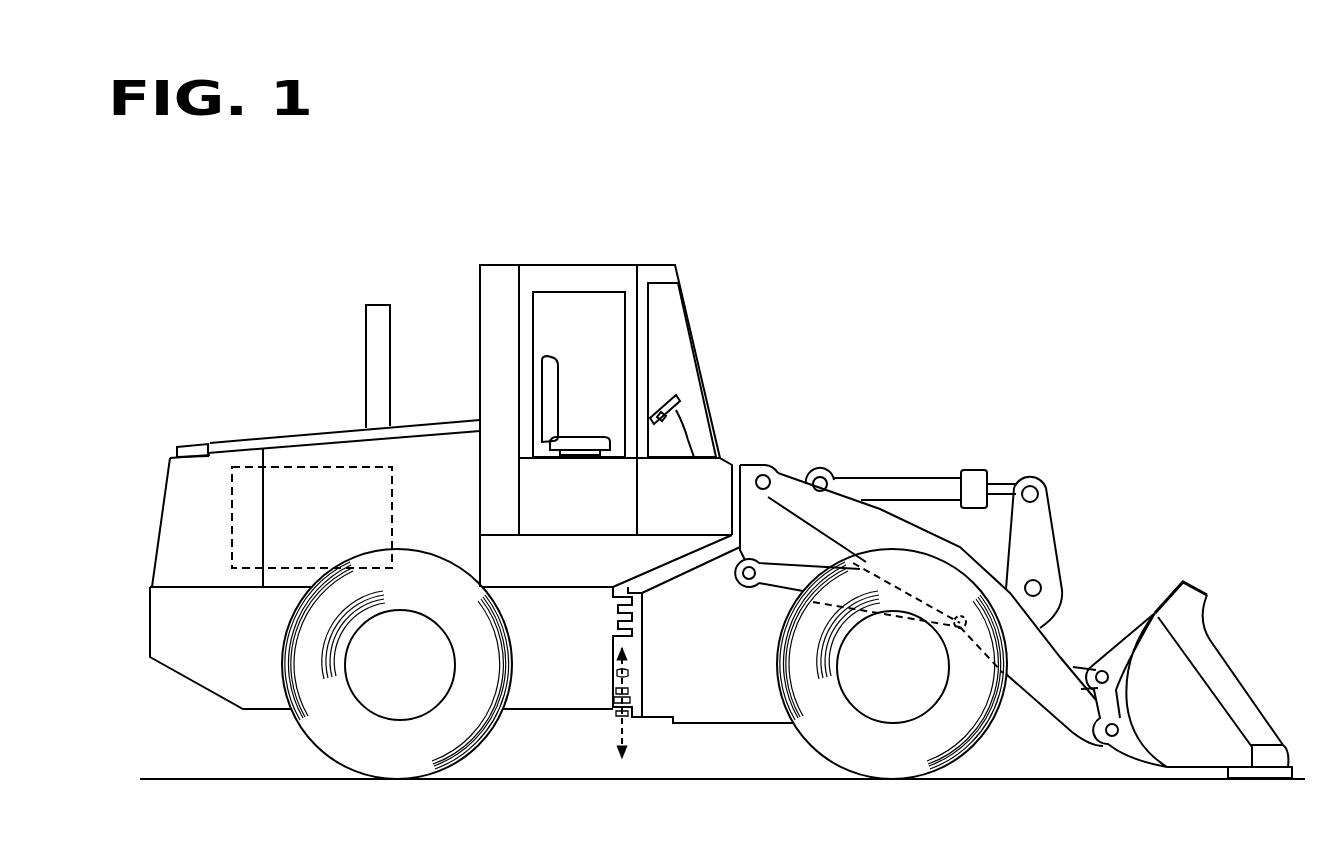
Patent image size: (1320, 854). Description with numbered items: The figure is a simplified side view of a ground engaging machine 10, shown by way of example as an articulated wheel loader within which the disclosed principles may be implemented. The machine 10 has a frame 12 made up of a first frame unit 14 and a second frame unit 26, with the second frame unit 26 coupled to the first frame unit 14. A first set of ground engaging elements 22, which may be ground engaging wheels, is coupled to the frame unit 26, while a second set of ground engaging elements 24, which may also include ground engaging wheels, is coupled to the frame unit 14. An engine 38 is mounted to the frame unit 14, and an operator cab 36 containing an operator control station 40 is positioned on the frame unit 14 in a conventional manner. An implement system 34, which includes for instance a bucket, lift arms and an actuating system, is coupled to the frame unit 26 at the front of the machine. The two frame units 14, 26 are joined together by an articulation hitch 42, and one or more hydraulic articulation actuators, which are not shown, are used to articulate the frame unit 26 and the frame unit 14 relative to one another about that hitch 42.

The ground engaging machine 10 is at (163, 308).
The frame 12 is at (177, 452).
The first frame unit 14 is at (183, 663).
The first set of ground engaging elements 22 is at (313, 748).
The second set of ground engaging elements 24 is at (968, 750).
The second frame unit 26 is at (718, 713).
The implement system 34 is at (1078, 594).
The operator cab 36 is at (680, 264).
The engine 38 is at (232, 538).
The operator control station 40 is at (656, 384).
The articulation hitch 42 is at (612, 724).